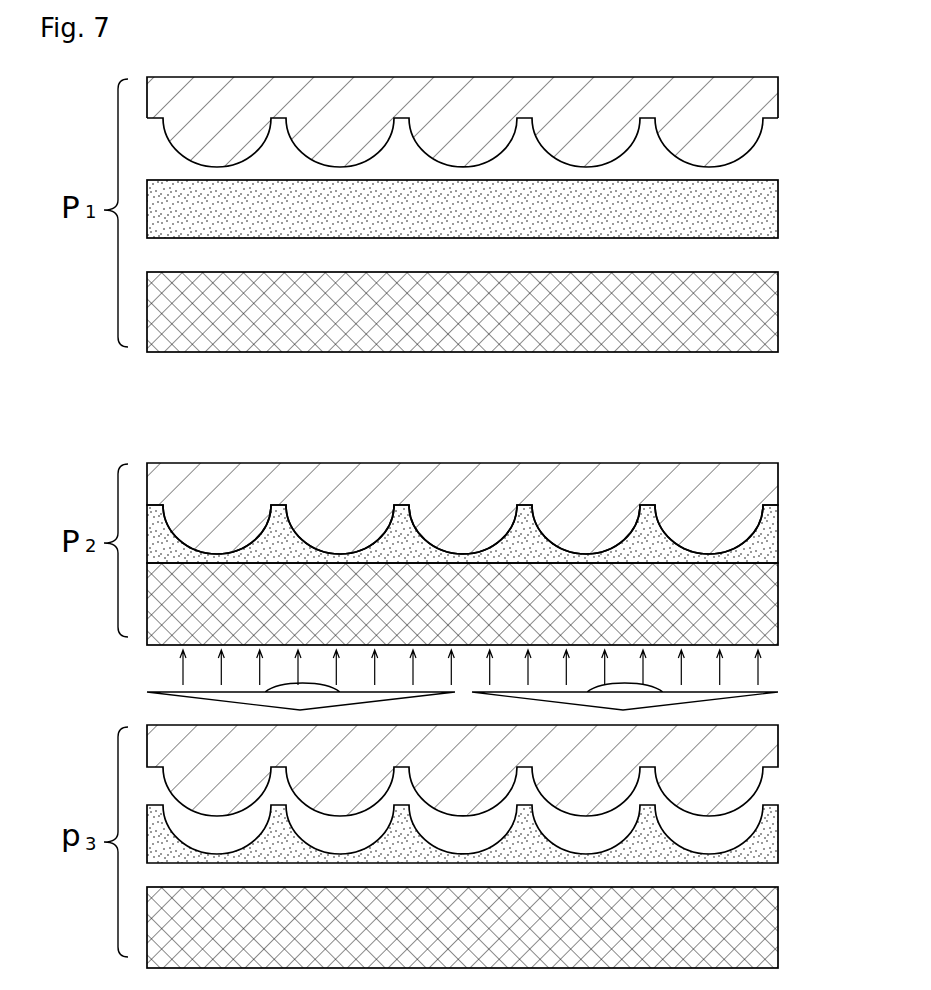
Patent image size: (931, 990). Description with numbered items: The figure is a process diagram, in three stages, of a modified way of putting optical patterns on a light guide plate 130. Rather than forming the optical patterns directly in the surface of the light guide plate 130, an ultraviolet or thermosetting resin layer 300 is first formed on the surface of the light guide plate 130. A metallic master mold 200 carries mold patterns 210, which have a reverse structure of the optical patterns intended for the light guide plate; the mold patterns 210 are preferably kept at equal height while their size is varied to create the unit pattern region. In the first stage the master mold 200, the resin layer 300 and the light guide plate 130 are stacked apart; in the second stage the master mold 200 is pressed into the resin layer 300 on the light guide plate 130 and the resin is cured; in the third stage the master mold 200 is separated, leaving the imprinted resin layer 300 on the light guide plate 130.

The master mold 200 is at (499, 446).
The mold patterns 210 is at (762, 141).
The resin layer 300 is at (778, 207).
The light guide plate 130 is at (778, 305).